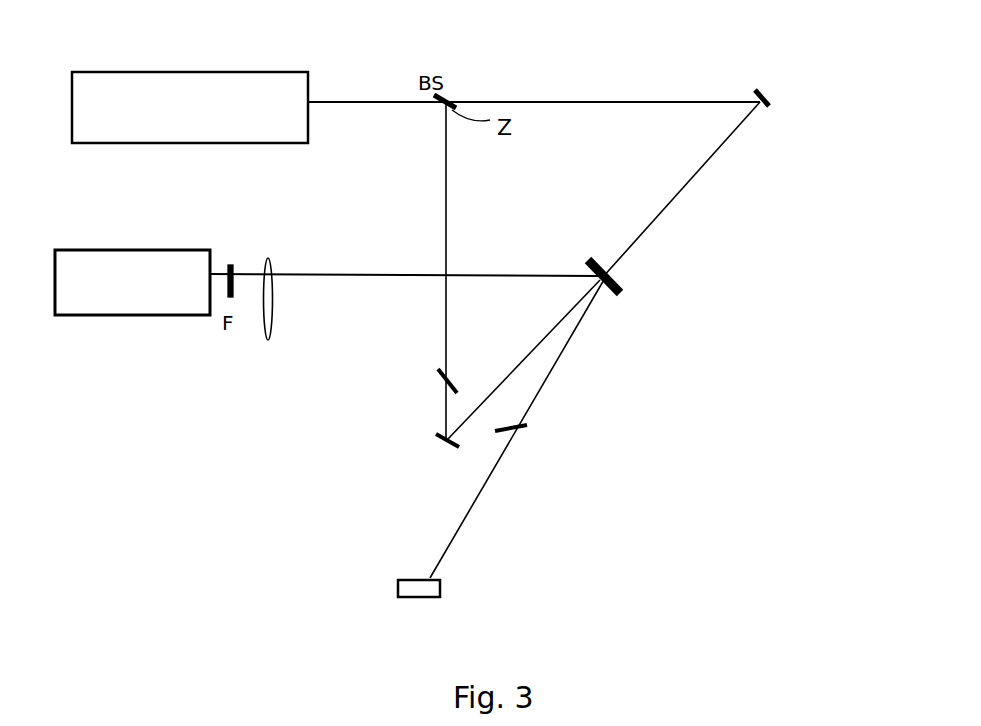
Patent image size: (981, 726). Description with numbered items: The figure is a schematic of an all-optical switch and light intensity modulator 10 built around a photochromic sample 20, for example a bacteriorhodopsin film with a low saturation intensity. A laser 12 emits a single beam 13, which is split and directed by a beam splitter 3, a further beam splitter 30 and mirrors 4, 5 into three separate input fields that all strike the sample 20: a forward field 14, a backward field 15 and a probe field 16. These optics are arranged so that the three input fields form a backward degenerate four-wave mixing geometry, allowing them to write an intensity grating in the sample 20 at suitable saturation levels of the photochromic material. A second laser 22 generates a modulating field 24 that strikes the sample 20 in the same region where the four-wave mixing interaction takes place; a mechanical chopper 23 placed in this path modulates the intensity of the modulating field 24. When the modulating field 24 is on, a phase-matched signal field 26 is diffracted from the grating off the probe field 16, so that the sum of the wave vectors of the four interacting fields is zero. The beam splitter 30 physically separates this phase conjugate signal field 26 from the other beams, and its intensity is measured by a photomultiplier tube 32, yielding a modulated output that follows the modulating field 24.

The all-optical switch and light intensity modulator 10 is at (184, 497).
The laser 12 is at (213, 72).
The single beam 13 is at (347, 101).
The mirror 4 is at (768, 107).
The backward field 15 is at (683, 186).
The second laser 22 is at (132, 316).
The mechanical chopper 23 is at (273, 318).
The modulating field 24 is at (542, 275).
The sample 20 is at (625, 287).
The beam splitter 3 is at (435, 378).
The mirror 5 is at (440, 446).
The forward field 14 is at (530, 349).
The probe field 16 is at (535, 398).
The beam splitter 30 is at (527, 427).
The signal field 26 is at (455, 532).
The photomultiplier tube 32 is at (422, 598).